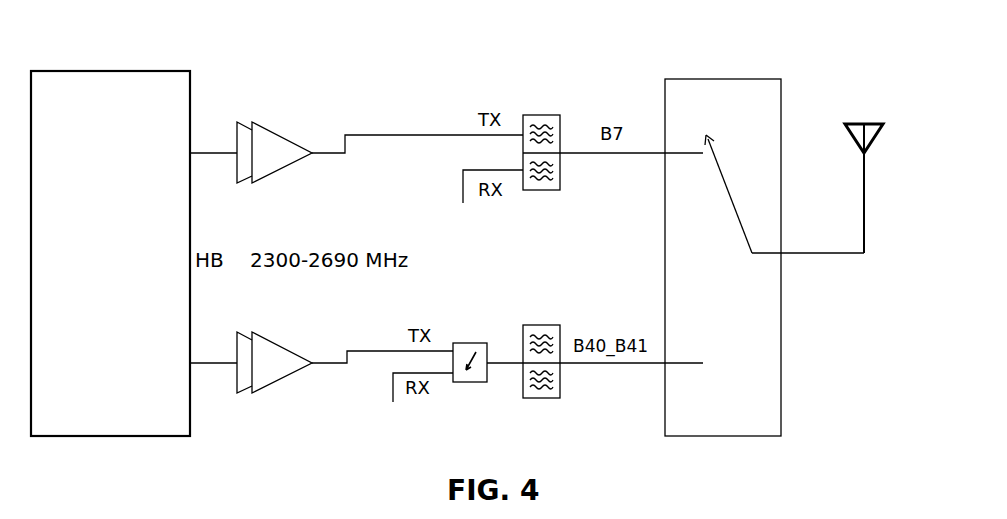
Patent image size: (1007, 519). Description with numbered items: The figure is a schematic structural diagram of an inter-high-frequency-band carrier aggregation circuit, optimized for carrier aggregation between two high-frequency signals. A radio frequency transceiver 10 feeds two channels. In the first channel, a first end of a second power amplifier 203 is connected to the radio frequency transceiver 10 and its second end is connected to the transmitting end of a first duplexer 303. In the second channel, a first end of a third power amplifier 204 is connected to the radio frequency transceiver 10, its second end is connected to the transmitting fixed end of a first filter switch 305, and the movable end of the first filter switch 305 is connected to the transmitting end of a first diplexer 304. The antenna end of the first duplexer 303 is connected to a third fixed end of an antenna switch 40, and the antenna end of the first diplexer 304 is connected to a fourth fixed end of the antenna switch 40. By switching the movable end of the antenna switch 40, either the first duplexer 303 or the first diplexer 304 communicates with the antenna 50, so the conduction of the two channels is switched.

The radio frequency transceiver 10 is at (192, 71).
The second power amplifier 203 is at (259, 122).
The third power amplifier 204 is at (259, 332).
The first duplexer 303 is at (561, 127).
The first diplexer 304 is at (561, 332).
The first filter switch 305 is at (467, 343).
The antenna switch 40 is at (782, 79).
The antenna 50 is at (872, 124).